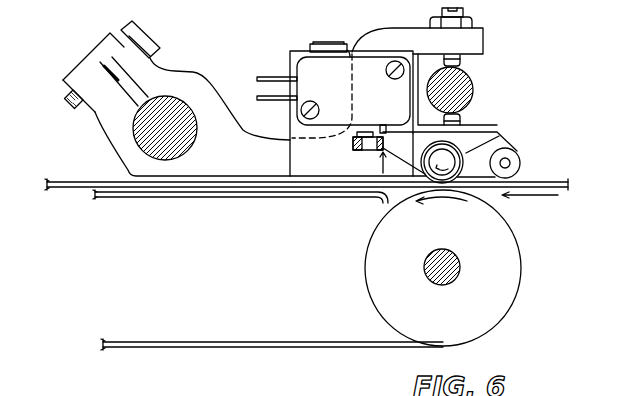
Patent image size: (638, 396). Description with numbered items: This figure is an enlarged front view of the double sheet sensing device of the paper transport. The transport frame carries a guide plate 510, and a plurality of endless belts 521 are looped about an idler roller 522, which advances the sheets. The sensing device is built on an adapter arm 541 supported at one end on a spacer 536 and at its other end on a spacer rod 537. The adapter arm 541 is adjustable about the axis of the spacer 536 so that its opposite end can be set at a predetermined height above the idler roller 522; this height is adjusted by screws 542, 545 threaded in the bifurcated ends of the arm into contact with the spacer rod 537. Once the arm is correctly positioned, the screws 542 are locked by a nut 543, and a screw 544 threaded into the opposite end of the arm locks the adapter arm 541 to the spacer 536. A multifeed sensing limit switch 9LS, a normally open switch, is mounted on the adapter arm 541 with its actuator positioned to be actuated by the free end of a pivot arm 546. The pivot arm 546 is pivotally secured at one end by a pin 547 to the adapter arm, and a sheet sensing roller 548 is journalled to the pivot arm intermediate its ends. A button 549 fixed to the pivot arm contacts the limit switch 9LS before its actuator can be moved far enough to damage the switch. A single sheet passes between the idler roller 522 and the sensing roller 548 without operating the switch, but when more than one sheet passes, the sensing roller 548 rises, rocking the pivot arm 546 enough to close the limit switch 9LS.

The screw 544 is at (148, 36).
The spacer 536 is at (196, 140).
The multifeed sensing limit switch 9LS is at (306, 50).
The button 549 is at (364, 112).
The pivot arm 546 is at (353, 141).
The nut 543 is at (472, 23).
The adapter arm 541 is at (484, 46).
The screw 545 is at (462, 62).
The spacer rod 537 is at (474, 93).
The screw 542 is at (462, 122).
The sheet sensing roller 548 is at (500, 134).
The pin 547 is at (515, 163).
The guide plate 510 is at (262, 200).
The endless belts 521 is at (267, 340).
The idler roller 522 is at (492, 324).